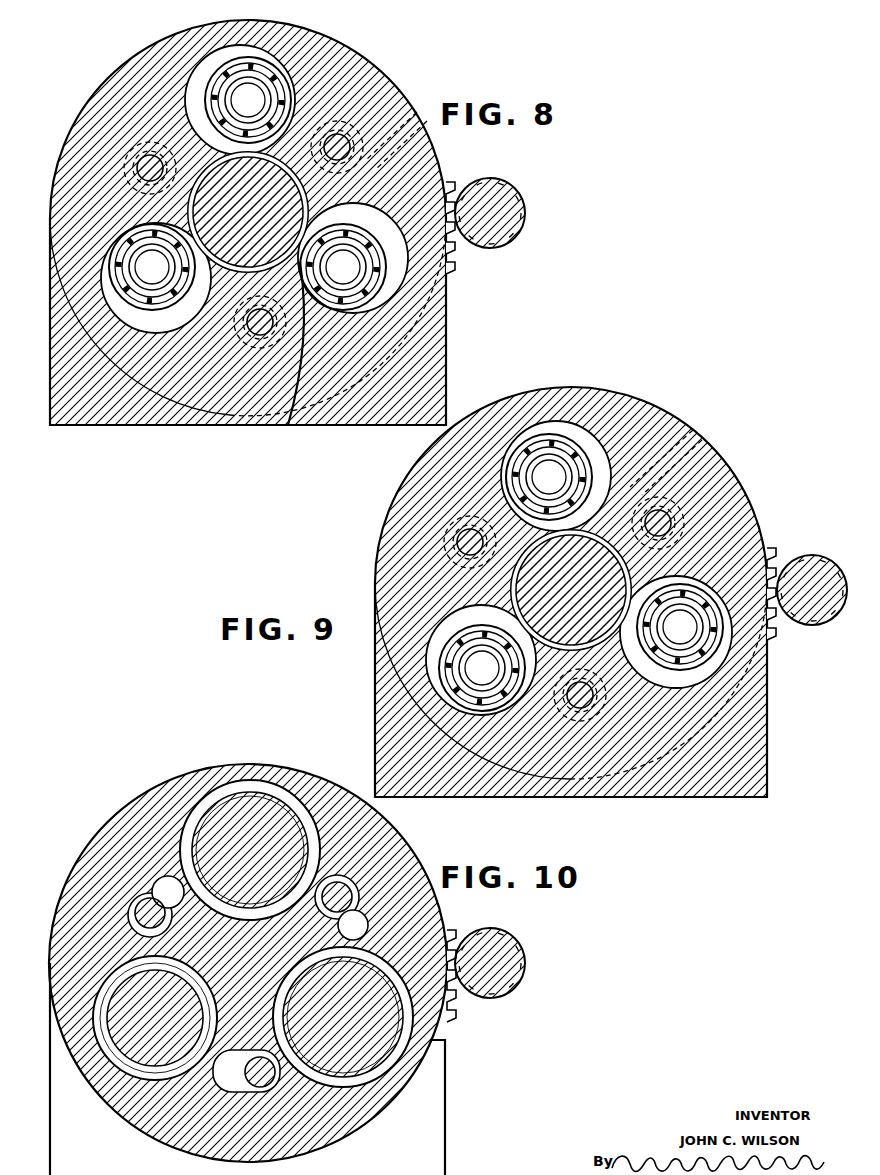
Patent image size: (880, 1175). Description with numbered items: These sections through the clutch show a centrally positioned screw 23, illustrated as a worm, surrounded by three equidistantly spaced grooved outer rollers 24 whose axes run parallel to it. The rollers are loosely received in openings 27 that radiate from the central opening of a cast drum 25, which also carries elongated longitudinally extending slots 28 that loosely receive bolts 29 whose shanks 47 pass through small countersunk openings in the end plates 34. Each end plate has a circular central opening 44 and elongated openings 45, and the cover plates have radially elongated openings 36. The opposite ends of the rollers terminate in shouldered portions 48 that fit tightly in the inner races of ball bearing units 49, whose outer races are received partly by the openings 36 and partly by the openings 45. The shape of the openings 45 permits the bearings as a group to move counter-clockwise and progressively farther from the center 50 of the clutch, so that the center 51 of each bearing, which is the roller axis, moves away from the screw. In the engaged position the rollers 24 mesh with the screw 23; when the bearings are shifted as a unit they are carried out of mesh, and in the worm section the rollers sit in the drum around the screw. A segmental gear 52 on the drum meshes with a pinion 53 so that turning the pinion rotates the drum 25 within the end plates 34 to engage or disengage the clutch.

In FIG. 8, the central screw 23 is at (306, 228).
In FIG. 9, the central screw 23 is at (606, 590).
In FIG. 10, the central screw 23 is at (298, 945).
In FIG. 10, the outer rollers 24 is at (247, 807).
In FIG. 10, the drum 25 is at (153, 790).
In FIG. 10, the openings 27 is at (298, 797).
In FIG. 8, the longitudinally extending slots 28 is at (132, 150).
In FIG. 9, the longitudinally extending slots 28 is at (690, 436).
In FIG. 10, the longitudinally extending slots 28 is at (148, 888).
In FIG. 10, the bolts 29 is at (152, 898).
In FIG. 8, the end plates 34 is at (104, 84).
In FIG. 9, the end plates 34 is at (479, 420).
In FIG. 8, the openings 36 is at (219, 68).
In FIG. 9, the openings 36 is at (578, 506).
In FIG. 8, the central opening 44 is at (291, 418).
In FIG. 8, the openings 45 is at (202, 62).
In FIG. 9, the openings 45 is at (591, 443).
In FIG. 8, the shanks 47 is at (152, 154).
In FIG. 9, the shanks 47 is at (660, 510).
In FIG. 8, the shouldered portions 48 is at (246, 100).
In FIG. 9, the shouldered portions 48 is at (549, 478).
In FIG. 8, the ball bearing units 49 is at (277, 72).
In FIG. 9, the ball bearing units 49 is at (579, 463).
In FIG. 8, the center of the clutch unit 50 is at (292, 207).
In FIG. 9, the center of the clutch unit 50 is at (582, 585).
In FIG. 10, the center of the clutch unit 50 is at (251, 967).
In FIG. 8, the center of each ball bearing 51 is at (250, 100).
In FIG. 9, the center of each ball bearing 51 is at (551, 476).
In FIG. 8, the segmental gear 52 is at (466, 255).
In FIG. 9, the segmental gear 52 is at (778, 556).
In FIG. 10, the segmental gear 52 is at (460, 1008).
In FIG. 8, the pinion 53 is at (525, 212).
In FIG. 9, the pinion 53 is at (825, 568).
In FIG. 10, the pinion 53 is at (525, 968).